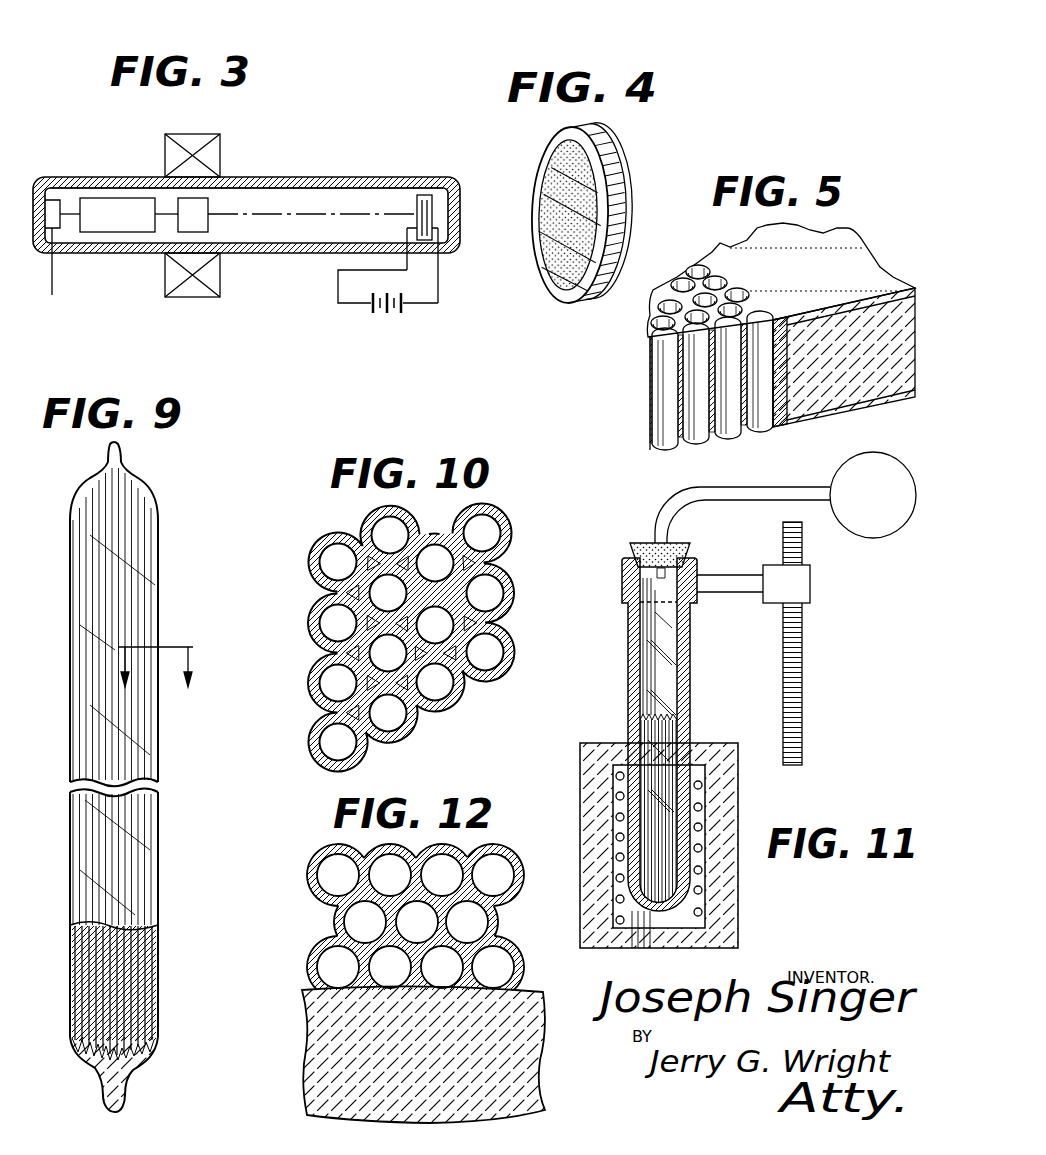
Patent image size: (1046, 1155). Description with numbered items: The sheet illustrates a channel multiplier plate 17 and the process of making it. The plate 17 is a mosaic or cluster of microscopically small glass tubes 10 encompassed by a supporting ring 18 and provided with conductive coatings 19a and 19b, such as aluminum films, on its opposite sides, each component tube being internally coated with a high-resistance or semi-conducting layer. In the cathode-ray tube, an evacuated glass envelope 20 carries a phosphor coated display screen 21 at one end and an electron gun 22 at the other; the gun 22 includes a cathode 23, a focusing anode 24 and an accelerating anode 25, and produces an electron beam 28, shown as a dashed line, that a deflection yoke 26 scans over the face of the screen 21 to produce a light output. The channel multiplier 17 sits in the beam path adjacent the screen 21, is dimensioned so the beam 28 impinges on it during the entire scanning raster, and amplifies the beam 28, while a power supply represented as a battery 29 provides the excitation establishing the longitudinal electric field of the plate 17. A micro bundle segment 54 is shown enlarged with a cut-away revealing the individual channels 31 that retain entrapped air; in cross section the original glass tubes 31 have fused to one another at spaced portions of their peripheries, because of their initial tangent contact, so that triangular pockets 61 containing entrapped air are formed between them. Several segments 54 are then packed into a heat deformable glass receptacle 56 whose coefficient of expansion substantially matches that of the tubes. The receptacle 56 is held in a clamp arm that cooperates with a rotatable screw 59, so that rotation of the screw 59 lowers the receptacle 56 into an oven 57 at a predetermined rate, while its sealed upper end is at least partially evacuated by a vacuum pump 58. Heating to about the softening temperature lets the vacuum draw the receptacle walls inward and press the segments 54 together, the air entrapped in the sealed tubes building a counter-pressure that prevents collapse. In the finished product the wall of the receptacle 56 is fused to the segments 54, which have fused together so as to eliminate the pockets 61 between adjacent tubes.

In FIG. 5, the glass tubes 10 is at (728, 425).
In FIG. 9, the glass tubes 10 is at (170, 649).
In FIG. 3, the channel multiplier plate 17 is at (417, 200).
In FIG. 4, the channel multiplier plate 17 is at (566, 180).
In FIG. 4, the supporting ring 18 is at (622, 186).
In FIG. 5, the supporting ring 18 is at (897, 318).
In FIG. 4, the conductive coating 19a is at (541, 252).
In FIG. 5, the conductive coating 19a is at (866, 285).
In FIG. 4, the conductive coating 19b is at (633, 246).
In FIG. 5, the conductive coating 19b is at (870, 410).
In FIG. 3, the glass envelope 20 is at (335, 178).
In FIG. 3, the display screen 21 is at (443, 218).
In FIG. 3, the electron gun 22 is at (113, 171).
In FIG. 3, the cathode 23 is at (53, 200).
In FIG. 3, the focusing anode 24 is at (116, 220).
In FIG. 3, the accelerating anode 25 is at (183, 205).
In FIG. 3, the deflection yoke 26 is at (193, 146).
In FIG. 3, the electron beam 28 is at (280, 214).
In FIG. 3, the battery 29 is at (373, 314).
In FIG. 10, the glass tubes 31 is at (513, 582).
In FIG. 12, the glass tubes 31 is at (415, 921).
In FIG. 9, the micro bundle segment 54 is at (157, 758).
In FIG. 11, the micro bundle segment 54 is at (650, 735).
In FIG. 12, the receptacle 56 is at (330, 1025).
In FIG. 11, the receptacle 56 is at (628, 643).
In FIG. 11, the oven 57 is at (597, 782).
In FIG. 11, the vacuum pump 58 is at (865, 538).
In FIG. 11, the screw 59 is at (803, 645).
In FIG. 10, the triangular pockets 61 is at (425, 688).